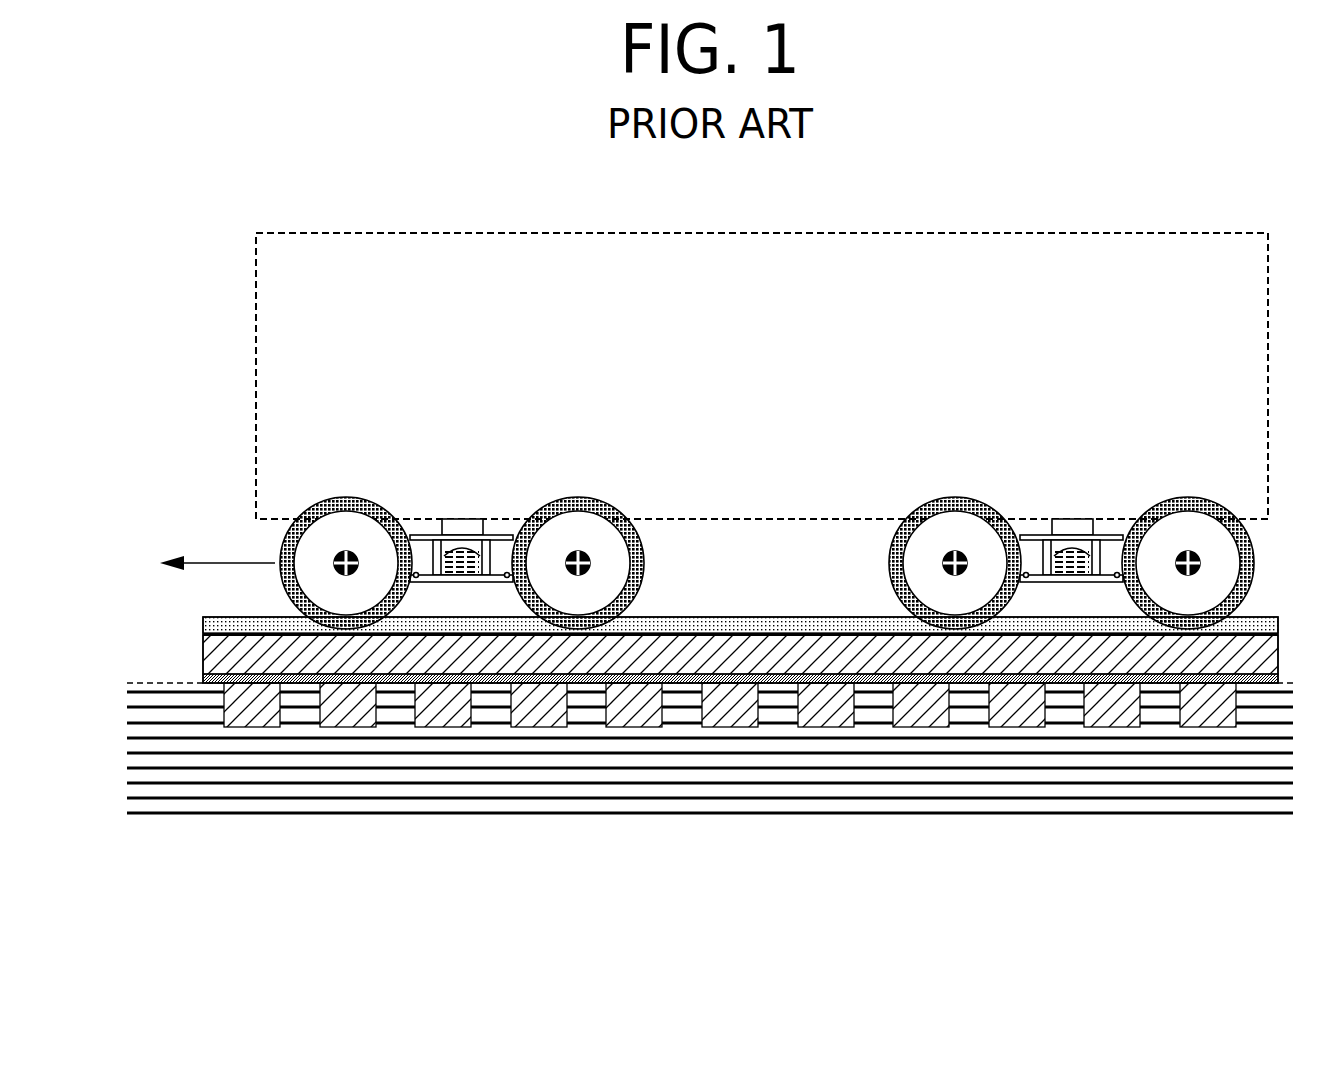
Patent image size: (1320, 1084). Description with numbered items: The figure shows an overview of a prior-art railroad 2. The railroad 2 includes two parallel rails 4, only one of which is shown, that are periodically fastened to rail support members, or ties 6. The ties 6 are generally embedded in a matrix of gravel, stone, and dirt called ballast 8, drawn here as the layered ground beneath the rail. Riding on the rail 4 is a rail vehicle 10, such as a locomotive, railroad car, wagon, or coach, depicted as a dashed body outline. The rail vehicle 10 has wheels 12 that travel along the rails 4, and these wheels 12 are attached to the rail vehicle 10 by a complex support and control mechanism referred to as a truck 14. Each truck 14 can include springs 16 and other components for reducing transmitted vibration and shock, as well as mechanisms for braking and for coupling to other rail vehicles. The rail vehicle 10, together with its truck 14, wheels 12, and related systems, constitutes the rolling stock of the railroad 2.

The railroad 2 is at (704, 394).
The rails 4 is at (736, 625).
The rail support members (ties) 6 is at (920, 720).
The ballast 8 is at (411, 792).
The rail vehicle 10 is at (768, 380).
The wheels 12 is at (346, 497).
The truck 14 is at (474, 505).
The springs 16 is at (455, 575).